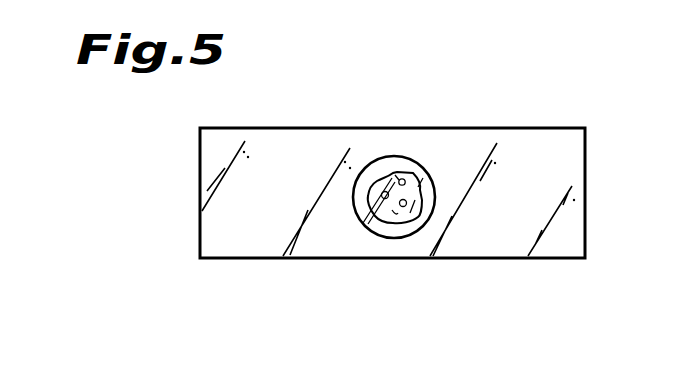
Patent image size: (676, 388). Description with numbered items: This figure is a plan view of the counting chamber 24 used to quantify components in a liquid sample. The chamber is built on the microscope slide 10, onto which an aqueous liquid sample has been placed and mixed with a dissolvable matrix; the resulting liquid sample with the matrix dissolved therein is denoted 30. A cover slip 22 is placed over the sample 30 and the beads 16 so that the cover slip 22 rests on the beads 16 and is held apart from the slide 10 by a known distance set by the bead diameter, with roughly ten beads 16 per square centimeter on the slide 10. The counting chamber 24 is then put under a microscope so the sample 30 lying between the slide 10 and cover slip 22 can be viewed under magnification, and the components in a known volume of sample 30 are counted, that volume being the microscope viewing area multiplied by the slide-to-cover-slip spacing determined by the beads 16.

The microscope slide 10 is at (254, 128).
The beads 16 is at (412, 175).
The cover slip 22 is at (362, 232).
The counting chamber 24 is at (170, 208).
The liquid sample with the matrix dissolved therein 30 is at (392, 218).